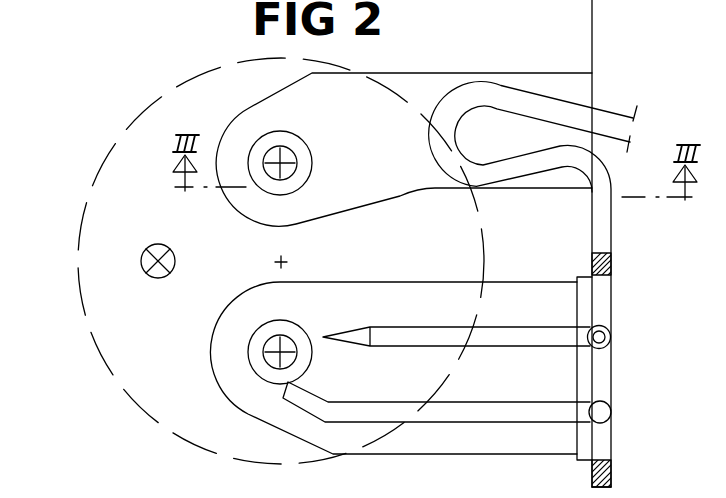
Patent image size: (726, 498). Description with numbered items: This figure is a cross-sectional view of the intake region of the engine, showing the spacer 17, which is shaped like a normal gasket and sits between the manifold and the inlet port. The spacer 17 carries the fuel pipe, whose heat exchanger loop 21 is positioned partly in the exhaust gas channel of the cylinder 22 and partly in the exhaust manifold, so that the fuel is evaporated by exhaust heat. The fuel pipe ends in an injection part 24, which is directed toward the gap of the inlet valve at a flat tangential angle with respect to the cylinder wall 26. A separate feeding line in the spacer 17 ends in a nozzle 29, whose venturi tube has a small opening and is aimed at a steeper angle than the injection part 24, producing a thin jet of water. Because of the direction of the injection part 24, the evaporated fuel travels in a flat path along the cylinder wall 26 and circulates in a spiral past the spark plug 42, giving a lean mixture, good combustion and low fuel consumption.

The spacer 17 is at (603, 472).
The heat exchanger loop 21 is at (507, 100).
The cylinder 22 is at (427, 90).
The injection part 24 is at (455, 412).
The cylinder wall 26 is at (157, 109).
The nozzle 29 is at (492, 338).
The spark plug 42 is at (146, 273).